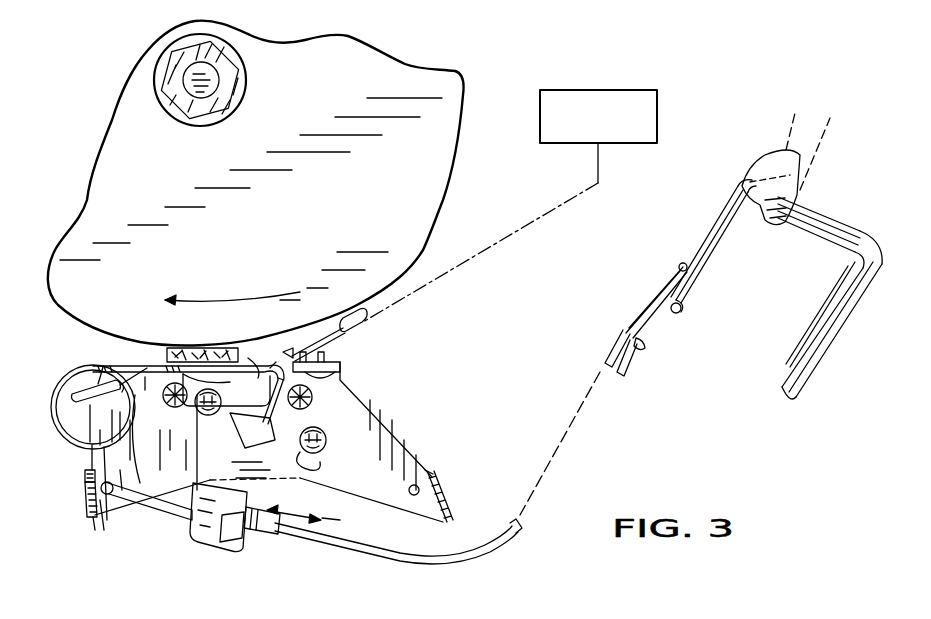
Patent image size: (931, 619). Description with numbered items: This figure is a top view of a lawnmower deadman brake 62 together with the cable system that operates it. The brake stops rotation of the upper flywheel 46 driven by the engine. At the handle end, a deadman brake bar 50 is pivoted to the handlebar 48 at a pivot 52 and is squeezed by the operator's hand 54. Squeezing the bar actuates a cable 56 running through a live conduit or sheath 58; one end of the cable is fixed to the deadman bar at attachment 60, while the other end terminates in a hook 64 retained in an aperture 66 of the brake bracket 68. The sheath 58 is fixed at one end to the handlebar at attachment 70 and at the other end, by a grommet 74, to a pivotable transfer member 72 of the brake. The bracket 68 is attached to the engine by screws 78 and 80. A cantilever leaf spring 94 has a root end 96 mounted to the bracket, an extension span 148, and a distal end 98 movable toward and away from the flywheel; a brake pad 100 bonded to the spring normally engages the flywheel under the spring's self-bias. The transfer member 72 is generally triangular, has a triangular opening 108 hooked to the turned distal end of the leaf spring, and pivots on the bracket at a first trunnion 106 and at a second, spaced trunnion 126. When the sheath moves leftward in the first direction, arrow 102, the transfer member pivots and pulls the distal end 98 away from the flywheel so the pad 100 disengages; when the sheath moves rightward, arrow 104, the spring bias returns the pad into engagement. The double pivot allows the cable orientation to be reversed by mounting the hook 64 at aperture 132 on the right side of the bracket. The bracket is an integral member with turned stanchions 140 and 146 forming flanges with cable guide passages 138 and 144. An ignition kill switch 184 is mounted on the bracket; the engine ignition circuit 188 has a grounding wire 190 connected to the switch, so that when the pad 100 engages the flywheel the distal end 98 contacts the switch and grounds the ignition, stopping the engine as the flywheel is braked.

The upper flywheel 46 is at (397, 199).
The handlebar 48 is at (845, 312).
The deadman brake bar 50 is at (828, 214).
The pivot 52 is at (683, 307).
The operator's hand 54 is at (772, 162).
The cable 56 is at (653, 290).
The live conduit or sheath 58 is at (614, 338).
The attachment 60 is at (683, 263).
The brake 62 is at (395, 375).
The hook 64 is at (108, 498).
The aperture 66 is at (90, 512).
The brake bracket 68 is at (378, 438).
The attachment 70 is at (648, 348).
The transfer member 72 is at (215, 550).
The grommet 74 is at (258, 538).
The screw 78 is at (168, 407).
The screw 80 is at (305, 406).
The cantilever leaf spring 94 is at (103, 350).
The root end 96 is at (88, 366).
The distal end 98 is at (250, 360).
The brake pad 100 is at (208, 348).
The arrow 102 is at (270, 509).
The arrow 104 is at (322, 519).
The trunnion 106 is at (205, 416).
The triangular shaped opening 108 is at (252, 432).
The trunnion 126 is at (320, 462).
The aperture 132 is at (433, 472).
The cable guide passage 138 is at (445, 497).
The stanchion 140 is at (430, 480).
The cable guide passage 144 is at (85, 497).
The stanchion 146 is at (88, 470).
The extension span 148 is at (190, 380).
The ignition kill switch 184 is at (345, 358).
The engine ignition circuit 188 is at (657, 118).
The grounding wire 190 is at (363, 337).